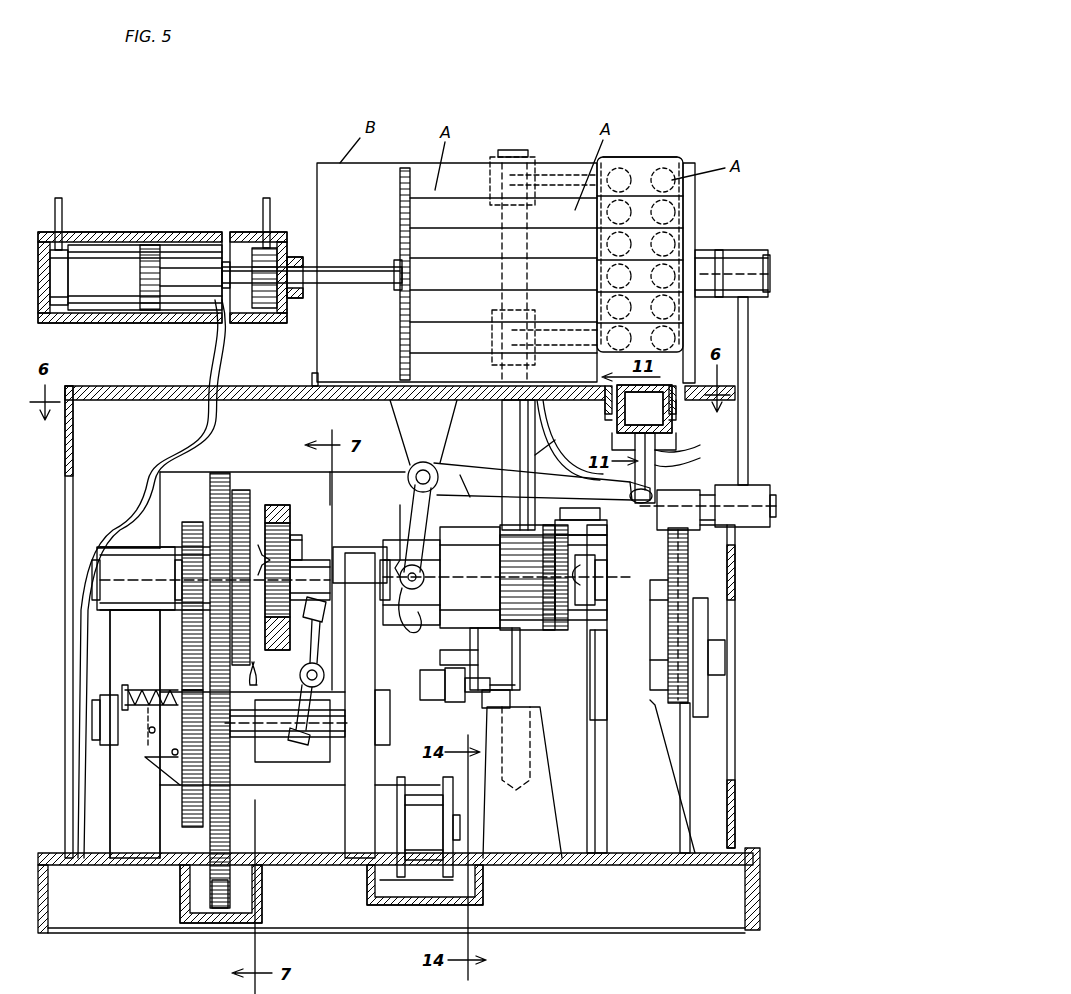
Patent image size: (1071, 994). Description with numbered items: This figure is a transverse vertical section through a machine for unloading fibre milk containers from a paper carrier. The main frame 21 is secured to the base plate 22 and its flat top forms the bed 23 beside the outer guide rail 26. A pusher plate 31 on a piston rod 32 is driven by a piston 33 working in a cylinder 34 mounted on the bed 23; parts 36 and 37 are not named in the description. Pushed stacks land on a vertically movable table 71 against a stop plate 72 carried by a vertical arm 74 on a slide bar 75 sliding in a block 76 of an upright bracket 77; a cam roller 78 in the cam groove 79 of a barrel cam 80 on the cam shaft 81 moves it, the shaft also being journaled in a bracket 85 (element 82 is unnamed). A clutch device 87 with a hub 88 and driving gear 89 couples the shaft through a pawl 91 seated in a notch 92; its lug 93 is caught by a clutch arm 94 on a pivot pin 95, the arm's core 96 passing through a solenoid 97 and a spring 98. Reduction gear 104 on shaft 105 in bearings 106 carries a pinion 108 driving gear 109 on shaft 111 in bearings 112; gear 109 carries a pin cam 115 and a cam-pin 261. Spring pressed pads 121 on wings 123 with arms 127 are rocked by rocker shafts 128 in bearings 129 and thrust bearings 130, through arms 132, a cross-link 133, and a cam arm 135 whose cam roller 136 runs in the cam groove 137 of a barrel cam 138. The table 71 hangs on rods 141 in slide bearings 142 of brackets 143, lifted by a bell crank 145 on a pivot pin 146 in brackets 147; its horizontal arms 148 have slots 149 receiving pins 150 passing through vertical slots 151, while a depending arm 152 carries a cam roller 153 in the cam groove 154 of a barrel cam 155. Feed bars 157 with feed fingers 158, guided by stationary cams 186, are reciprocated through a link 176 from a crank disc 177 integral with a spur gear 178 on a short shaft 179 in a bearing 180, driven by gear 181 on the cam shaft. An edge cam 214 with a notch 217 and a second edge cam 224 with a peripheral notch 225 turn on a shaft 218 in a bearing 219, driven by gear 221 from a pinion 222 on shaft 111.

The main frame 21 is at (65, 445).
The base plate 22 is at (760, 888).
The bed 23 is at (283, 386).
The outer guide rail 26 is at (318, 378).
The pusher plate 31 is at (400, 205).
The piston rod 32 is at (345, 268).
The piston 33 is at (148, 250).
The cylinder 34 is at (180, 245).
The pin 36 is at (268, 210).
The pin 37 is at (62, 212).
The table 71 is at (672, 370).
The stop plate 72 is at (690, 205).
The vertical arm 74 is at (750, 365).
The slide bar 75 is at (774, 500).
The block 76 is at (685, 515).
The upright bracket 77 is at (618, 689).
The cam roller 78 is at (580, 540).
The cam groove 79 is at (585, 575).
The barrel cam 80 is at (598, 598).
The cam shaft 81 is at (308, 572).
The bracket 82 is at (652, 612).
The bracket 85 is at (118, 648).
The clutch device 87 is at (266, 535).
The inner cylindrical hub 88 is at (298, 535).
The driving gear 89 is at (243, 490).
The spring pressed pawl 91 is at (275, 520).
The notch 92 is at (278, 506).
The lug 93 is at (290, 540).
The clutch arm 94 is at (310, 625).
The pivot pin 95 is at (300, 675).
The movable core 96 is at (300, 690).
The electric solenoid 97 is at (261, 679).
The spring 98 is at (148, 745).
The rotation reduction gear 104 is at (218, 480).
The shaft 105 is at (92, 578).
The bearings 106 is at (125, 565).
The pinion 108 is at (190, 522).
The rotation reduction gear 109 is at (182, 645).
The shaft 111 is at (285, 738).
The bearings 112 is at (92, 720).
The pin cam 115 is at (148, 695).
The spring pressed pads 121 is at (663, 168).
The wings 123 is at (680, 158).
The arms 127 is at (560, 185).
The rocker shafts 128 is at (512, 155).
The bearings 129 is at (502, 405).
The thrust bearings 130 is at (522, 850).
The arms 132 is at (475, 695).
The cross-link 133 is at (435, 700).
The cam arm 135 is at (490, 690).
The cam roller 136 is at (472, 655).
The cam groove 137 is at (445, 600).
The barrel cam 138 is at (440, 656).
The depending rods 141 is at (644, 409).
The vertical slide bearings 142 is at (700, 447).
The brackets 143 is at (535, 455).
The bifurcated bell crank 145 is at (462, 477).
The pivot pin 146 is at (423, 470).
The brackets 147 is at (405, 418).
The horizontal arms 148 is at (533, 481).
The slots 149 is at (585, 520).
The pins 150 is at (655, 492).
The vertical slots 151 is at (630, 490).
The depending arm 152 is at (425, 520).
The cam roller 153 is at (418, 595).
The cam groove 154 is at (400, 508).
The barrel cam 155 is at (505, 530).
The feed bars 157 is at (545, 440).
The feed fingers 158 is at (605, 392).
The link 176 is at (710, 680).
The crank disc 177 is at (712, 712).
The spur gear 178 is at (683, 725).
The short shaft 179 is at (590, 665).
The bearing 180 is at (653, 708).
The gear 181 is at (688, 578).
The stationary cams 186 is at (605, 415).
The edge cam 214 is at (375, 880).
The notch 217 is at (397, 830).
The shaft 218 is at (460, 825).
The bearing 219 is at (297, 840).
The gear 221 is at (215, 905).
The pinion 222 is at (300, 762).
The second edge cam 224 is at (450, 870).
The peripheral notch 225 is at (430, 785).
The cam-pin 261 is at (175, 756).